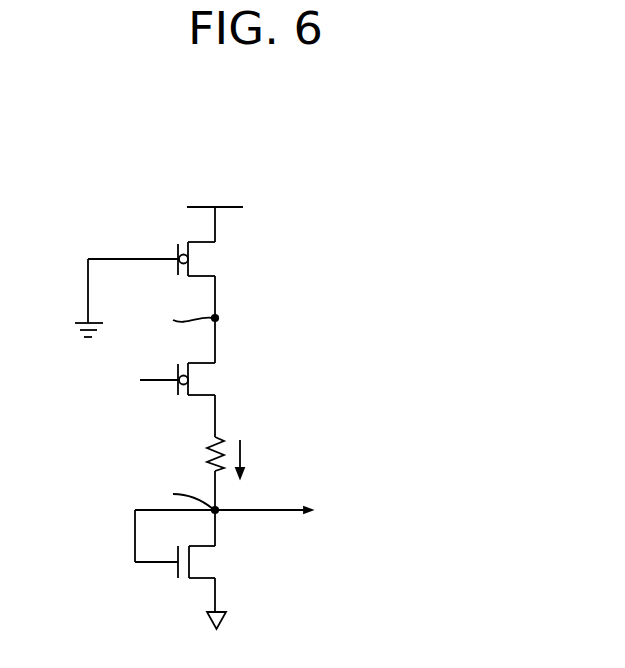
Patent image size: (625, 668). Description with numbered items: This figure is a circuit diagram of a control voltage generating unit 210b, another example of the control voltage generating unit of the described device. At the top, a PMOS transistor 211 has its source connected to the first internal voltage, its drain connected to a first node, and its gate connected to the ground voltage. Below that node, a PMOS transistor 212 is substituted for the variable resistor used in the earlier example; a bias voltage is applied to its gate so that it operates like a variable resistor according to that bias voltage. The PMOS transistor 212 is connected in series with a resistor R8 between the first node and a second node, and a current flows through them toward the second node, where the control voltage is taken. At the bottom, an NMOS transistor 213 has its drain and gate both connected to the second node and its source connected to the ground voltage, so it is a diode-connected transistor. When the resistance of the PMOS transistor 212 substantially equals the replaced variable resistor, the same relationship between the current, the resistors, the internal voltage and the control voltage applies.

The control voltage generating unit 210b is at (268, 128).
The PMOS transistor 211 is at (204, 261).
The PMOS transistor 212 is at (204, 382).
The NMOS transistor 213 is at (204, 564).
The resistor R8 is at (202, 454).